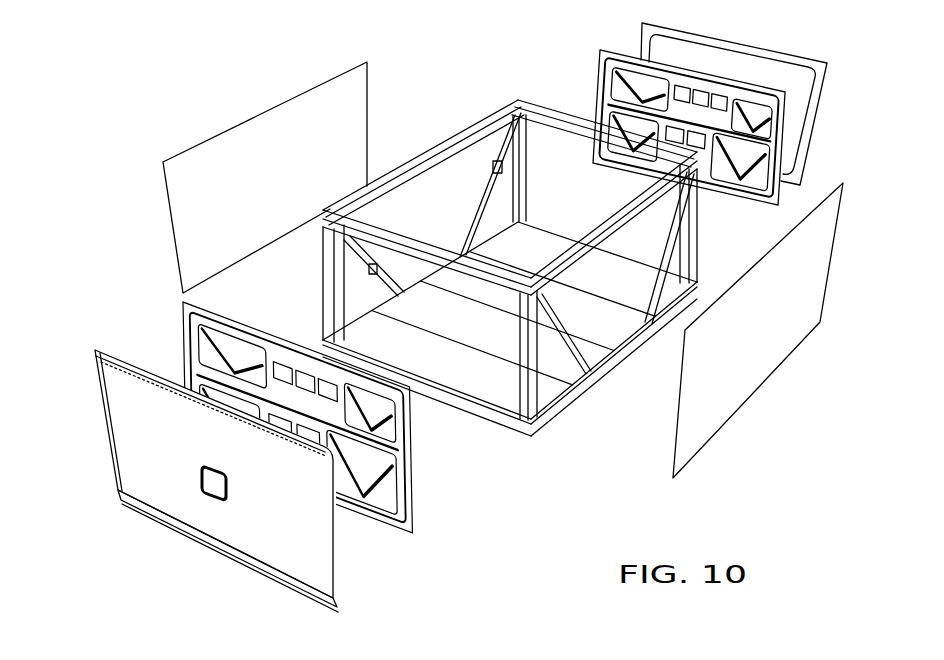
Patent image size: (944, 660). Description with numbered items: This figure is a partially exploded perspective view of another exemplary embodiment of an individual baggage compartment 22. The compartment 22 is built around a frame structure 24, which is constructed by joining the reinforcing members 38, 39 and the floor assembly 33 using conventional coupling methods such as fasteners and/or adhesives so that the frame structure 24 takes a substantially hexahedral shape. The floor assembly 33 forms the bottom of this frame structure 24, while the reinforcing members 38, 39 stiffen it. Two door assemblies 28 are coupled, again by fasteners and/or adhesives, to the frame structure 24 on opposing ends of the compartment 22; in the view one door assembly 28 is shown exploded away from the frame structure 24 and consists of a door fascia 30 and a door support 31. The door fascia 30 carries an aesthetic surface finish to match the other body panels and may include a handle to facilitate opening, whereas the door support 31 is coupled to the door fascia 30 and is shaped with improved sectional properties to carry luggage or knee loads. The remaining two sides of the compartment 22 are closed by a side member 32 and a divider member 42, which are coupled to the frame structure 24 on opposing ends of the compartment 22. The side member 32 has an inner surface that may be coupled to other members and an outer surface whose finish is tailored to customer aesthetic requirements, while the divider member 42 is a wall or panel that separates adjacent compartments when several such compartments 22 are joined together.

The compartment 22 is at (180, 62).
The frame structure 24 is at (507, 86).
The door assembly 28 is at (153, 273).
The door fascia 30 is at (193, 503).
The door support 31 is at (410, 508).
The side member 32 is at (752, 362).
The floor assembly 33 is at (397, 322).
The reinforcing member 38 is at (560, 113).
The reinforcing member 39 is at (492, 157).
The divider member 42 is at (188, 218).